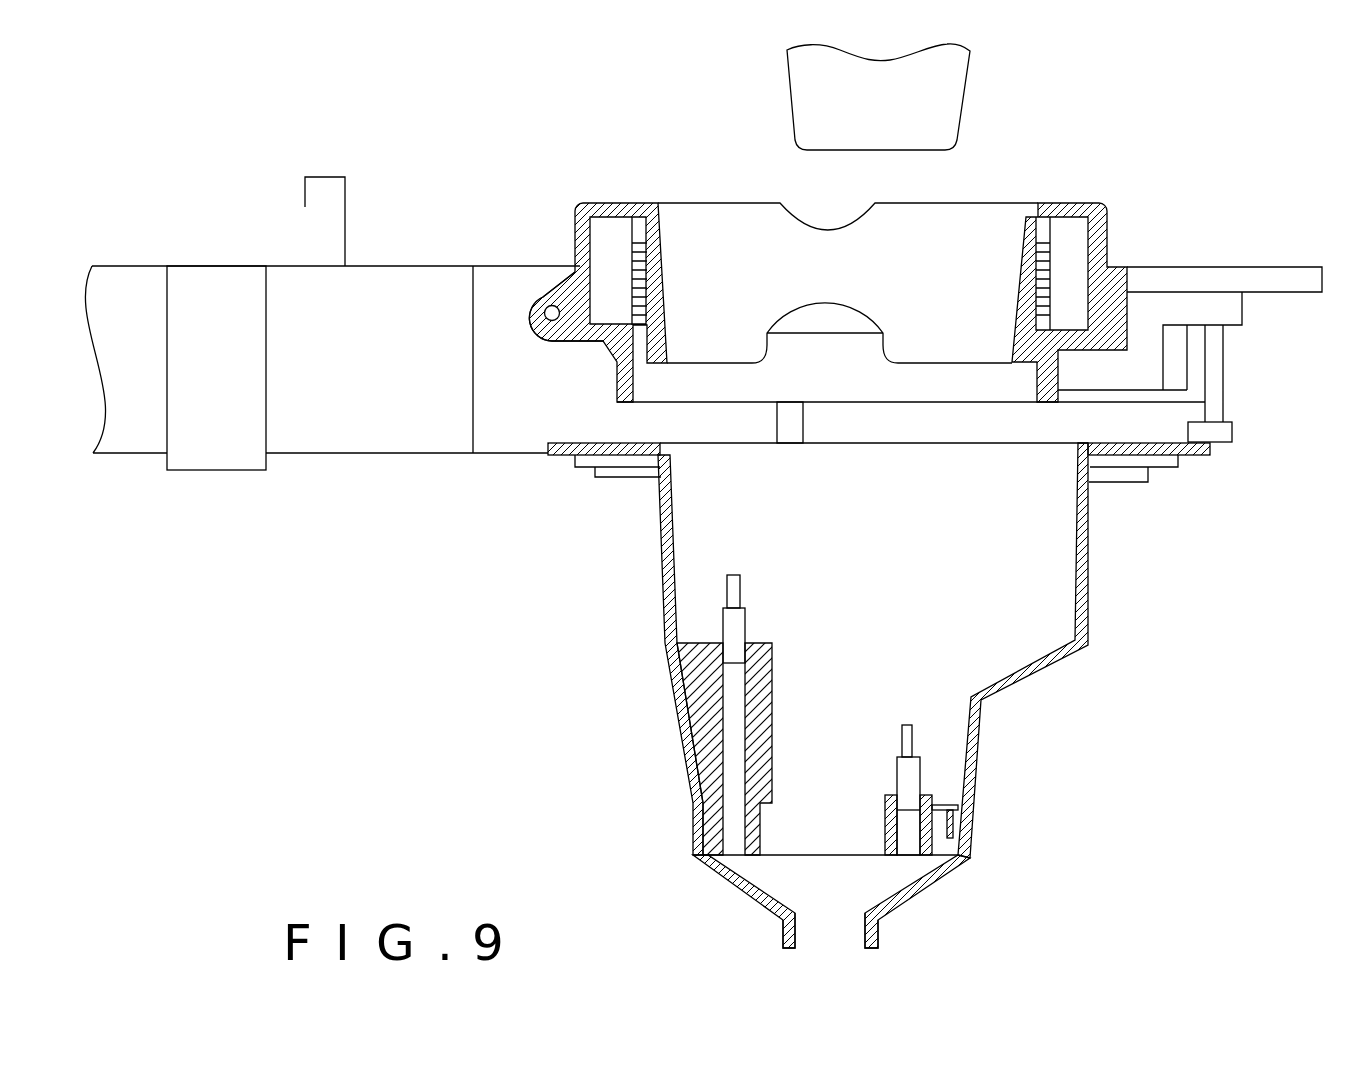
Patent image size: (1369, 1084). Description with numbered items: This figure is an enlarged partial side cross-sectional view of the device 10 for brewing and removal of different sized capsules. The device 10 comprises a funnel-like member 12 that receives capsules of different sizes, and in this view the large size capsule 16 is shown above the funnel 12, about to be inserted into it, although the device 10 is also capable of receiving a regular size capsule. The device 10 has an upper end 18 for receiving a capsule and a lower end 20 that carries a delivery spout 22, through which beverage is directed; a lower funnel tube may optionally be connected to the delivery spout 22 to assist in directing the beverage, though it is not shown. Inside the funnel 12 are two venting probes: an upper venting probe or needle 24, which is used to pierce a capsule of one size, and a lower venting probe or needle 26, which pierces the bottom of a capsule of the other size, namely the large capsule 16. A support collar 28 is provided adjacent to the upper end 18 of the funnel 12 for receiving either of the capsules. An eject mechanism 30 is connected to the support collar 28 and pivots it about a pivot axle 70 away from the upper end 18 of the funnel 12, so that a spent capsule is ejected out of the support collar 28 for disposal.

The device for brewing and removal of different sized capsules 10 is at (1196, 226).
The funnel-like member 12 is at (815, 701).
The large size capsule 16 is at (965, 120).
The upper end 18 is at (1084, 202).
The lower end 20 is at (930, 888).
The delivery spout 22 is at (875, 932).
The upper venting probe or needle 24 is at (728, 596).
The lower venting probe or needle 26 is at (908, 740).
The support collar 28 is at (797, 347).
The eject mechanism 30 is at (515, 473).
The pivot axle 70 is at (551, 308).